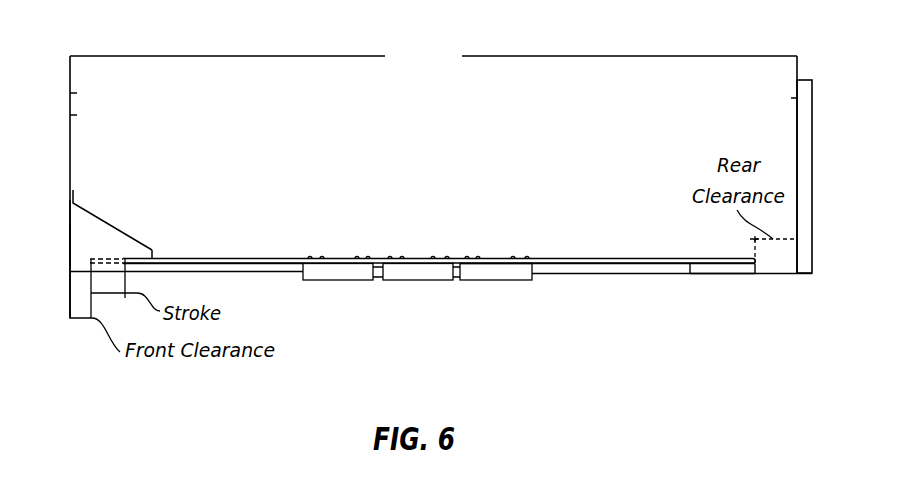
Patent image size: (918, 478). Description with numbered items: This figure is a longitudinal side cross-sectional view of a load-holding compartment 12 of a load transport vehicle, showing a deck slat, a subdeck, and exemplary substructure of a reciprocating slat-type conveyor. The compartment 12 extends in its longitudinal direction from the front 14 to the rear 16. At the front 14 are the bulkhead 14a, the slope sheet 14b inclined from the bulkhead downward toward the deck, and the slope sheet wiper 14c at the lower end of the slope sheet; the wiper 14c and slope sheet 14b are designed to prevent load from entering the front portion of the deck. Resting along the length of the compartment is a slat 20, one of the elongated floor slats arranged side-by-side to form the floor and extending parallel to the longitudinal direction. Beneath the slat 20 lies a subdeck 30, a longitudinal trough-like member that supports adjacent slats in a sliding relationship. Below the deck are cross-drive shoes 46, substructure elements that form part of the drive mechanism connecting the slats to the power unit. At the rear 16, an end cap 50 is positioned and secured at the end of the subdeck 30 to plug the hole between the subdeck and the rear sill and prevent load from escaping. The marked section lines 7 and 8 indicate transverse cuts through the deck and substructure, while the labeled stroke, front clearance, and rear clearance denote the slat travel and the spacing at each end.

The load-holding compartment 12 is at (430, 131).
The front 14 is at (70, 253).
The bulkhead 14a is at (72, 238).
The slope sheet 14b is at (102, 221).
The slope sheet wiper 14c is at (154, 252).
The rear 16 is at (812, 236).
The slat 20 is at (275, 258).
The subdeck 30 is at (257, 271).
The cross-drive shoe 46 is at (483, 270).
The end cap 50 is at (723, 273).
The section line 7- 7 is at (418, 254).
The section line 8- 8 is at (604, 255).